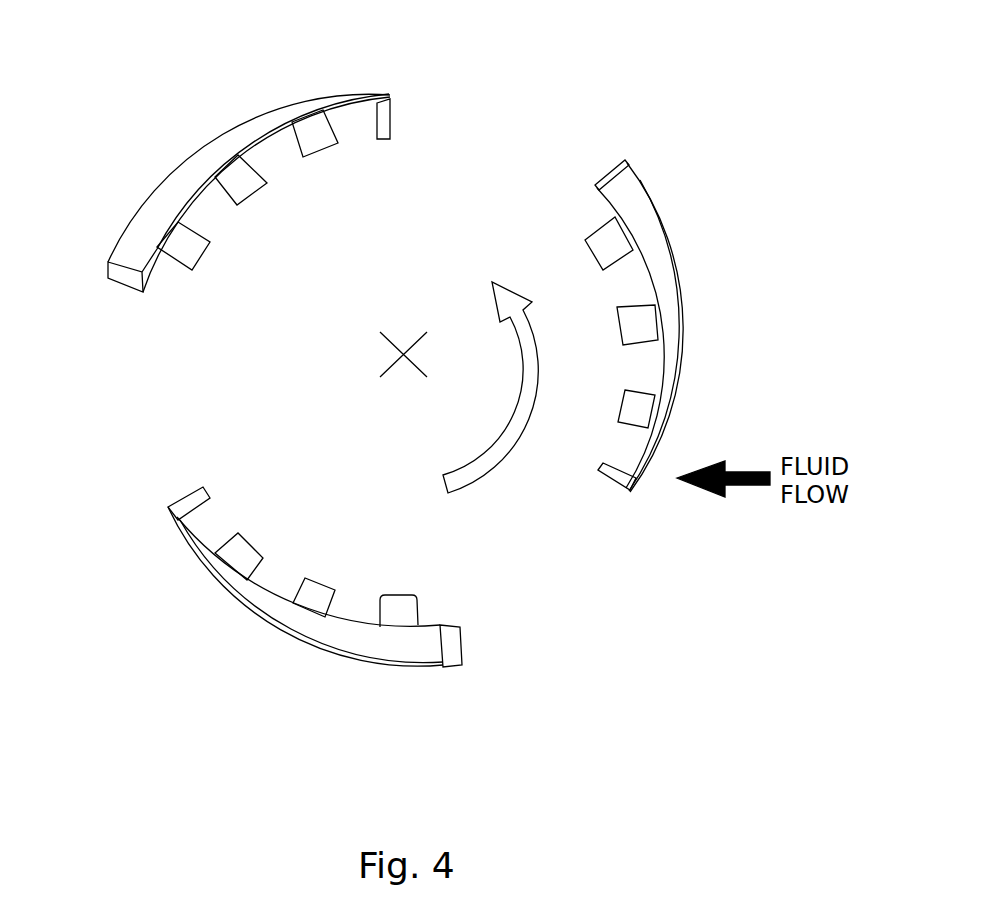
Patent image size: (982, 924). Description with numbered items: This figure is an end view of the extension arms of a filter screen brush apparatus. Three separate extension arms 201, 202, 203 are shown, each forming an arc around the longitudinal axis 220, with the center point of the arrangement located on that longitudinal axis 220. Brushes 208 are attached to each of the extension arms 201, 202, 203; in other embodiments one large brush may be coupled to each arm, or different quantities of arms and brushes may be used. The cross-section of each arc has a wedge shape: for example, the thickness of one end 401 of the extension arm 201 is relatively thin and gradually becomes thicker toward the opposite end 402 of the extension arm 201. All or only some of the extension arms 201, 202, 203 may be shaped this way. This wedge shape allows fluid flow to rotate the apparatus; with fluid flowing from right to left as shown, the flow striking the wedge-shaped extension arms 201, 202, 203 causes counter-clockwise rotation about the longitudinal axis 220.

The extension arm 201 is at (200, 147).
The extension arm 202 is at (683, 308).
The extension arm 203 is at (307, 640).
The brushes 208 is at (252, 195).
The longitudinal axis 220 is at (403, 352).
The end of extension arm 401 is at (392, 97).
The opposite end of extension arm 402 is at (108, 265).